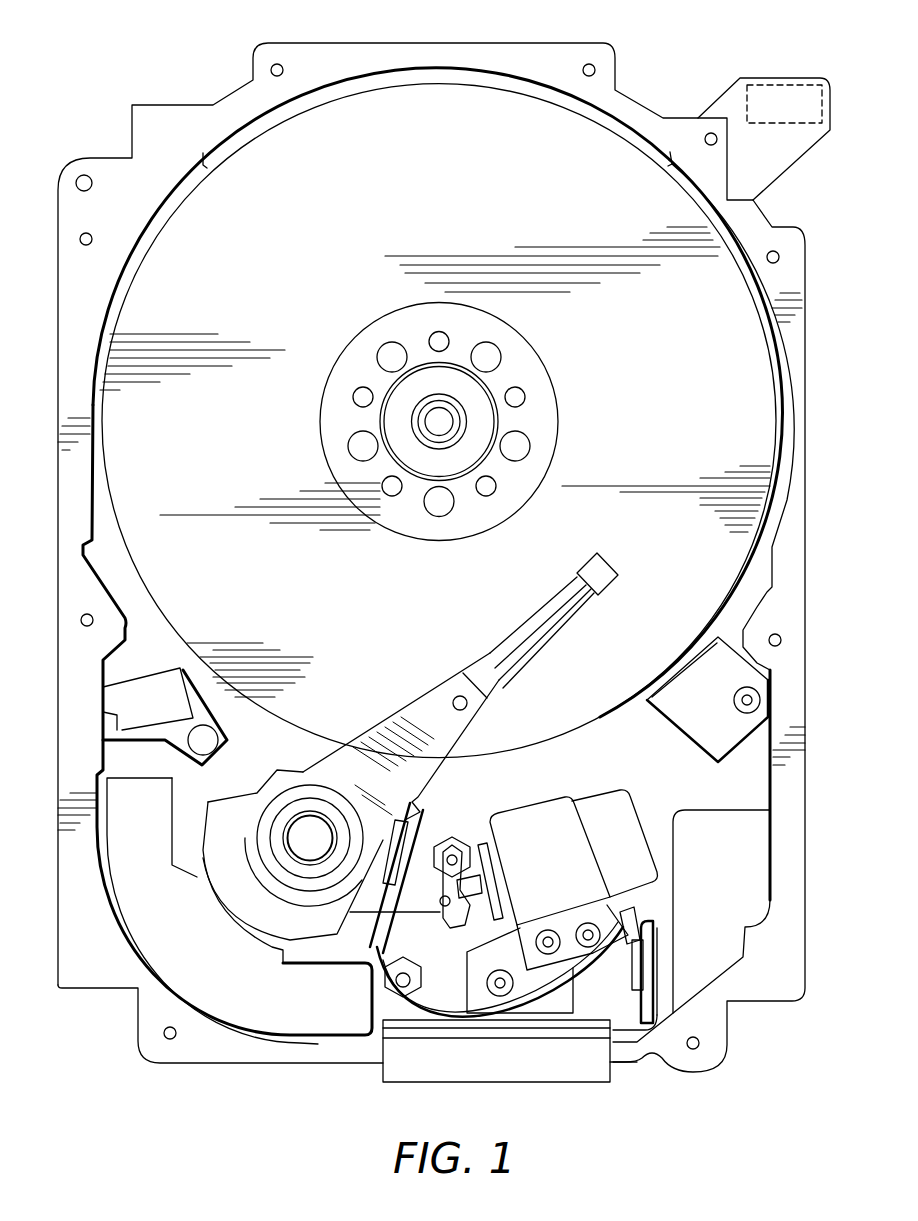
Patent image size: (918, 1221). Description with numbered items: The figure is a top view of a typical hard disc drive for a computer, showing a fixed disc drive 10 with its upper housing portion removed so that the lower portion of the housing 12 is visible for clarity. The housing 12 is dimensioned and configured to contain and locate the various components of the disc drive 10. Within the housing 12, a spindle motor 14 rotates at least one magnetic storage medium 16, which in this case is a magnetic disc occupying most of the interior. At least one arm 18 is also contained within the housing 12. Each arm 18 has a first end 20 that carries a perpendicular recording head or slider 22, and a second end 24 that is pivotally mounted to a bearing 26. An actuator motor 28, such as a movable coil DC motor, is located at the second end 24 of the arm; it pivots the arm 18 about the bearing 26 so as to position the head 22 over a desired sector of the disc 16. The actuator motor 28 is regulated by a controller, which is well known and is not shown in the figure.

The fixed disc drive 10 is at (110, 97).
The housing 12 is at (568, 57).
The spindle motor 14 is at (432, 427).
The magnetic storage medium 16 is at (352, 217).
The arm 18 is at (423, 717).
The first end 20 is at (542, 605).
The recording head or slider 22 is at (598, 572).
The second end 24 is at (337, 777).
The bearing 26 is at (302, 828).
The actuator motor 28 is at (207, 956).